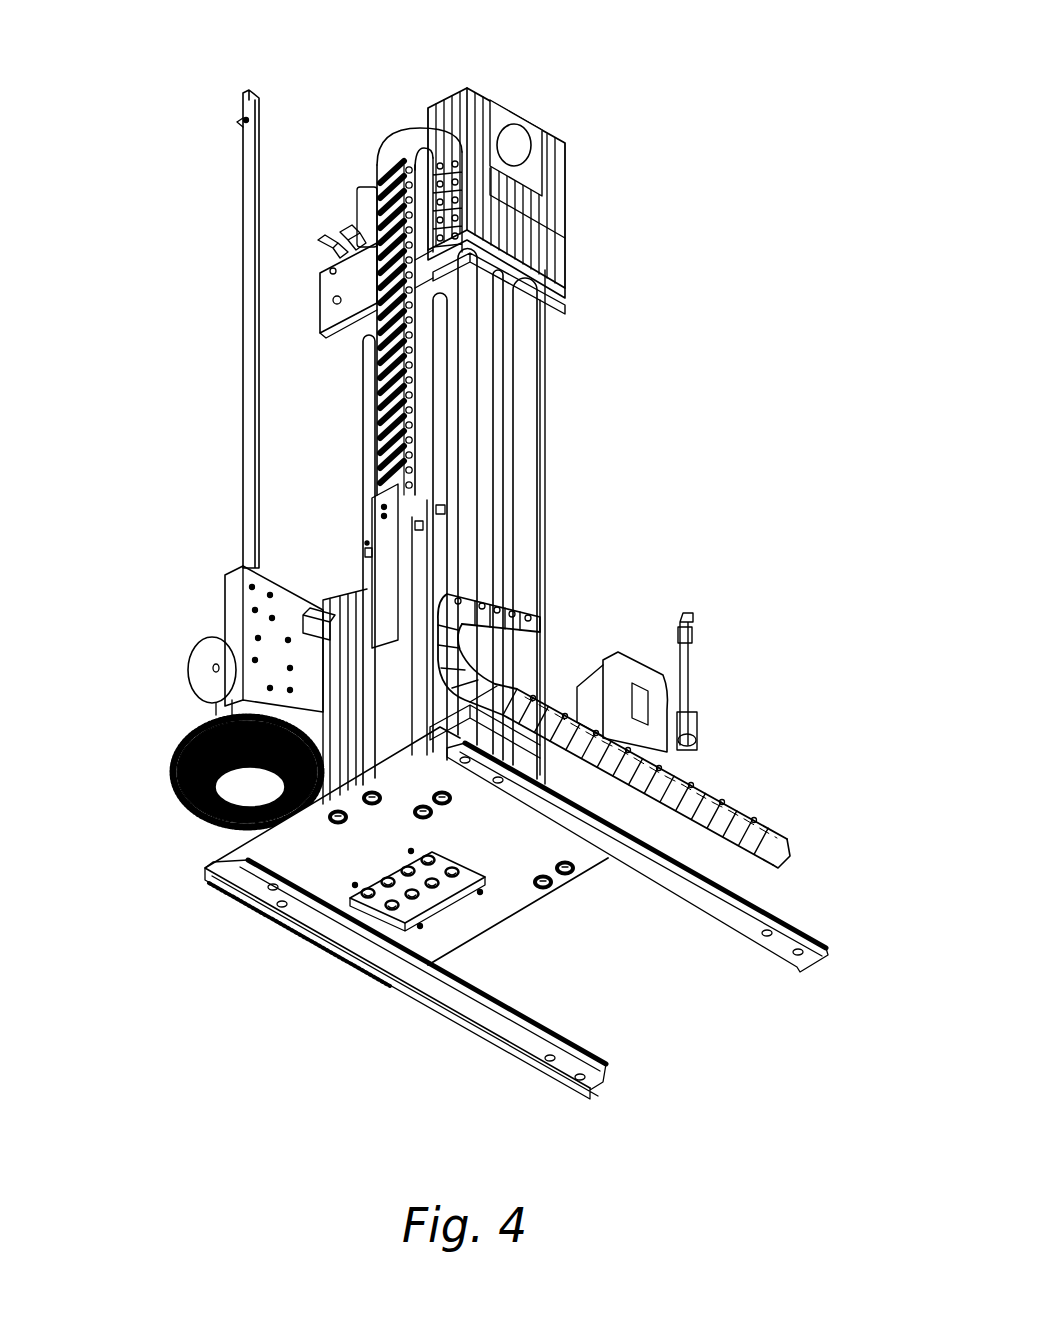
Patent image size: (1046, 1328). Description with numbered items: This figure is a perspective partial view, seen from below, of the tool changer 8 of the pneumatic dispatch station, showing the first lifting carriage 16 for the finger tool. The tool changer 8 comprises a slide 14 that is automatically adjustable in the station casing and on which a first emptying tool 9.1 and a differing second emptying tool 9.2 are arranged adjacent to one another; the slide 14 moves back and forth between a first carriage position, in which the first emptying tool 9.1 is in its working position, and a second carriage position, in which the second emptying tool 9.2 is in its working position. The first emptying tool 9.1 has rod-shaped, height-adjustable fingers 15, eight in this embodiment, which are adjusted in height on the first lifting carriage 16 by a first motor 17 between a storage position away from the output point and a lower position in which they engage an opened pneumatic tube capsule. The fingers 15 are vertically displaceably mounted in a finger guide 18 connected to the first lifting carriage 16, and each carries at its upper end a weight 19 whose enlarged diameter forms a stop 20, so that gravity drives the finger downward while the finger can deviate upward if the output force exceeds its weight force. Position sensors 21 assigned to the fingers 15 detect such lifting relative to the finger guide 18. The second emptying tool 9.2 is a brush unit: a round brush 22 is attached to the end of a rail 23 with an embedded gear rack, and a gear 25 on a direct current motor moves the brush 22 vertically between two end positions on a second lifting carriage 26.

The tool changer 8 is at (741, 332).
The first emptying tool 9.1 is at (545, 481).
The second emptying tool 9.2 is at (176, 749).
The slide 14 is at (495, 898).
The finger 15 is at (420, 868).
The first lifting carriage 16 is at (552, 248).
The first motor 17 is at (663, 703).
The finger guide 18 is at (327, 295).
The weight 19 is at (363, 190).
The stop 20 is at (467, 90).
The position sensor 21 is at (345, 235).
The brush 22 is at (192, 810).
The rail 23 is at (250, 308).
The gear 25 is at (203, 665).
The second lifting carriage 26 is at (326, 618).